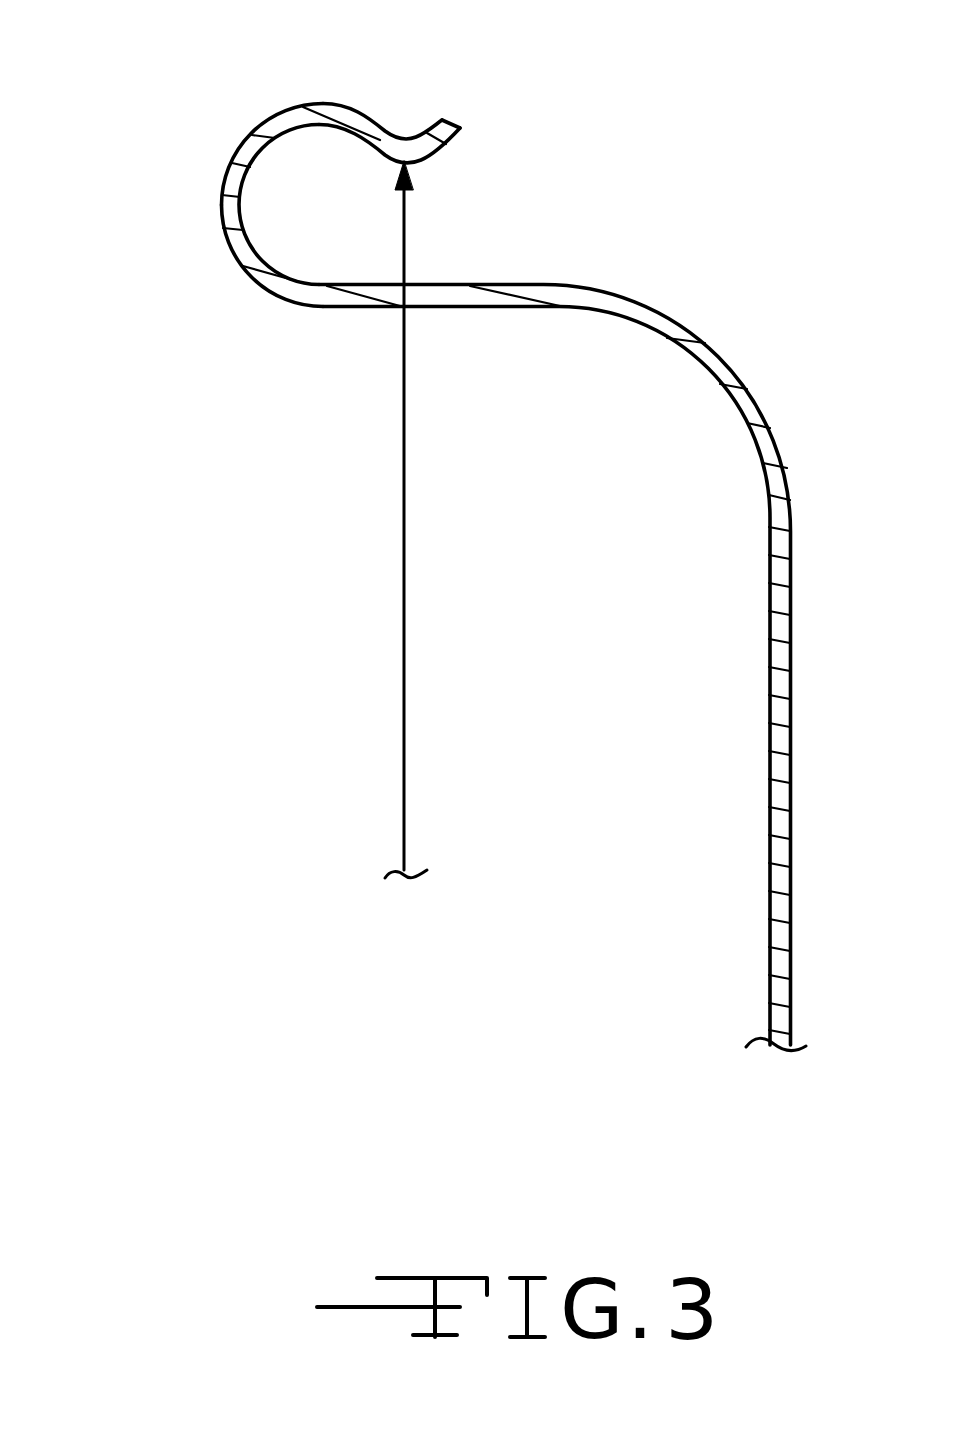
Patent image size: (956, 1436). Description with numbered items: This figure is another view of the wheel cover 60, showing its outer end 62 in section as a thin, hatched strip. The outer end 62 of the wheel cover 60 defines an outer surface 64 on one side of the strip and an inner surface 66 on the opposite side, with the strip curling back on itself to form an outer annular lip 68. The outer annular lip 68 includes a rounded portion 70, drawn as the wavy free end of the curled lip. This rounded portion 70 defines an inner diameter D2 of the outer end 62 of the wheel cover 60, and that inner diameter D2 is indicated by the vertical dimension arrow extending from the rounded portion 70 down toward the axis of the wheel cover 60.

The wheel cover 60 is at (705, 935).
The outer end 62 is at (195, 207).
The outer surface 64 is at (277, 296).
The inner surface 66 is at (245, 220).
The outer annular lip 68 is at (370, 121).
The rounded portion 70 is at (445, 150).
The inner diameter D2 is at (405, 632).